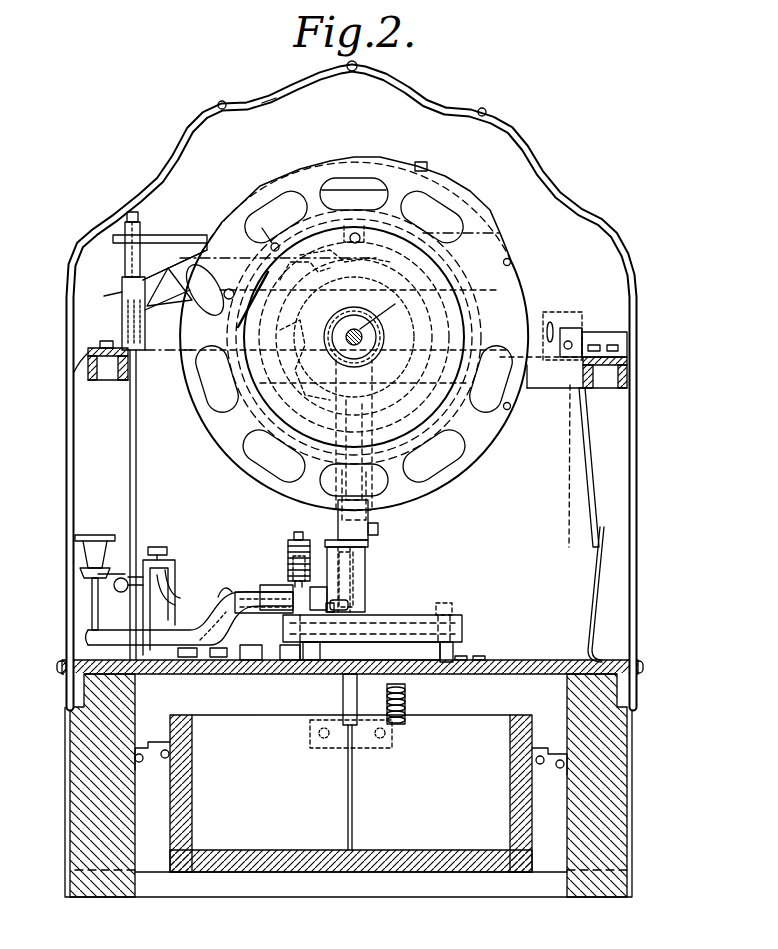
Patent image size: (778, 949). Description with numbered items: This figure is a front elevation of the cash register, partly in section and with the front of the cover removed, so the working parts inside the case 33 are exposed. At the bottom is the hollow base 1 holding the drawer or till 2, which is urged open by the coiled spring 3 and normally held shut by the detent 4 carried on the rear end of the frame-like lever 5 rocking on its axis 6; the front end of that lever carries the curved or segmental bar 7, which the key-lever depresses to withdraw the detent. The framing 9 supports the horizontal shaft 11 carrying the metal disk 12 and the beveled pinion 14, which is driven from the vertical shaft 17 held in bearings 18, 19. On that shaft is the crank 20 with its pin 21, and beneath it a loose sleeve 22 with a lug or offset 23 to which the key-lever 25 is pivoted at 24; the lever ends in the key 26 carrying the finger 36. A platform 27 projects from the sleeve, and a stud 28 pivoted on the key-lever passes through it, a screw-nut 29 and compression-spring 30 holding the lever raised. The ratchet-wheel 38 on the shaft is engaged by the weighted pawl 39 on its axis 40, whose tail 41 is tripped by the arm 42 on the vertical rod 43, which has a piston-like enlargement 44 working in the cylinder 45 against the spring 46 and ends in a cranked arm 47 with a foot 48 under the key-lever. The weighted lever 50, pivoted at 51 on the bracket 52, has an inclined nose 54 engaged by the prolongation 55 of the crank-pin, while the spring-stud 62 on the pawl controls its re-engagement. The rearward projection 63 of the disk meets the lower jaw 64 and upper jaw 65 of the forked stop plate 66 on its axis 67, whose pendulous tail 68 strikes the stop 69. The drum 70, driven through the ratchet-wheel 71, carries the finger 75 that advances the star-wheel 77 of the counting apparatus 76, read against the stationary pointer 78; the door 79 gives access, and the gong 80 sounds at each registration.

The base 1 is at (62, 668).
The drawer or till 2 is at (350, 785).
The coiled spring 3 is at (400, 730).
The detent 4 is at (343, 696).
The frame-like lever 5 is at (470, 652).
The axis 6 is at (462, 630).
The curved or segmental bar 7 is at (440, 620).
The framing 9 is at (66, 362).
The horizontal shaft 11 is at (370, 327).
The metal disk 12 is at (380, 165).
The beveled pinion 14 is at (348, 327).
The vertical shaft 17 is at (382, 526).
The bearing 18 is at (378, 430).
The bearing 19 is at (351, 720).
The crank 20 is at (339, 523).
The pin 21 is at (352, 566).
The sleeve 22 is at (368, 578).
The lug or offset 23 is at (360, 600).
The horizontal pivot 24 is at (350, 612).
The key-lever 25 is at (252, 592).
The button head or key 26 is at (98, 535).
The table or platform 27 is at (278, 585).
The pin or stud 28 is at (298, 535).
The screw-nut 29 is at (292, 532).
The compression-spring 30 is at (288, 556).
The case 33 is at (66, 445).
The finger 36 is at (135, 570).
The ratchet-wheel 38 is at (392, 276).
The weighted pawl 39 is at (372, 246).
The axis of motion 40 is at (266, 229).
The tail 41 is at (185, 255).
The arm 42 is at (168, 235).
The vertical rod 43 is at (136, 470).
The piston-like enlargement 44 is at (125, 262).
The cylinder 45 is at (101, 290).
The spring 46 is at (122, 318).
The cranked arm 47 is at (178, 598).
The foot or platform 48 is at (190, 660).
The weighted lever 50 is at (217, 602).
The pivot 51 is at (252, 664).
The bracket 52 is at (290, 664).
The inclined nose 54 is at (445, 598).
The prolongation 55 is at (360, 622).
The spring-stud 62 is at (354, 192).
The rearward projection 63 is at (551, 320).
The lower jaw 64 is at (541, 452).
The upper jaw 65 is at (562, 323).
The forked or notched stop plate or lever 66 is at (575, 326).
The axis of motion 67 is at (572, 343).
The counterbalance or pendulous tail 68 is at (590, 460).
The stop 69 is at (590, 622).
The drum 70 is at (430, 322).
The ratchet-wheel 71 is at (414, 338).
The finger 75 is at (300, 366).
The counting apparatus 76 is at (178, 355).
The star-wheel 77 is at (218, 382).
The stationary pointer 78 is at (302, 262).
The door 79 is at (263, 91).
The bell or gong 80 is at (470, 192).